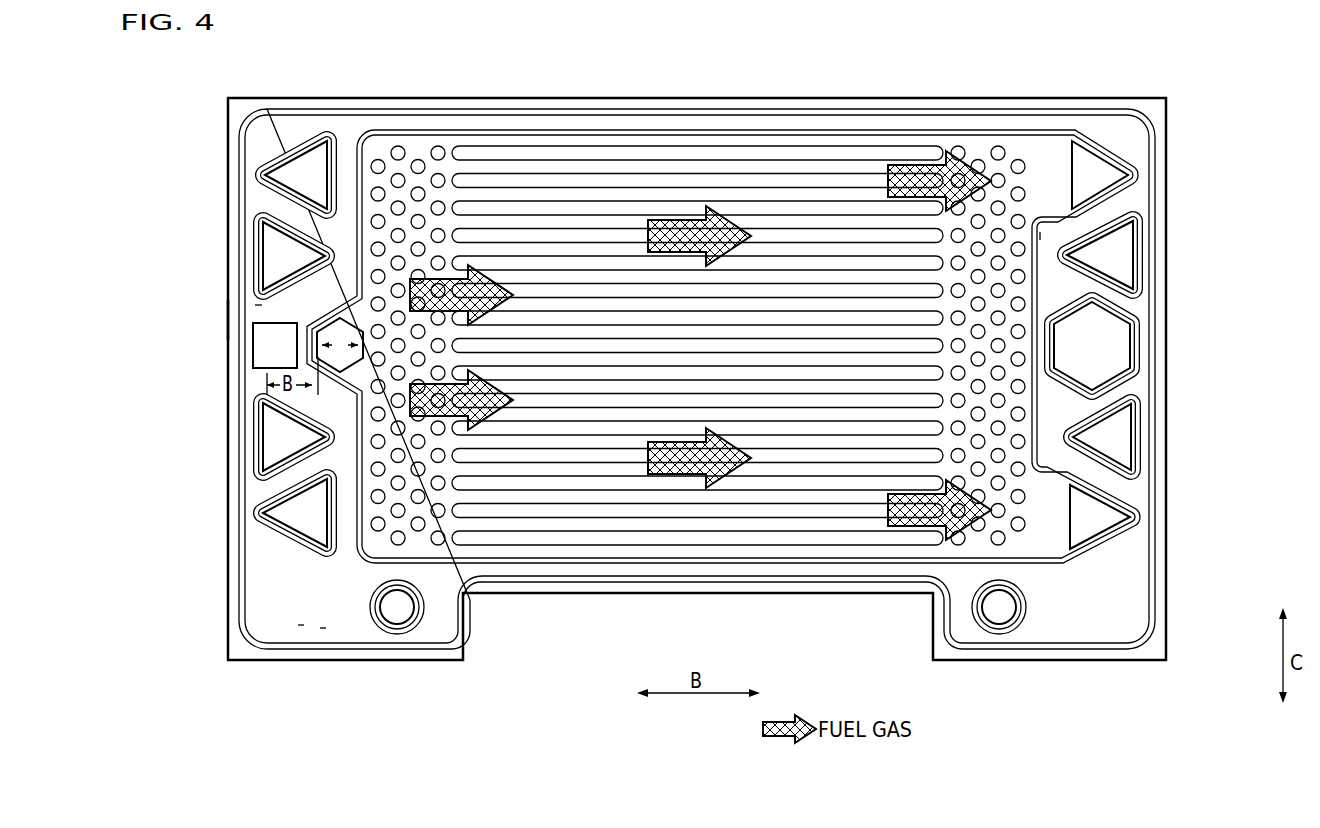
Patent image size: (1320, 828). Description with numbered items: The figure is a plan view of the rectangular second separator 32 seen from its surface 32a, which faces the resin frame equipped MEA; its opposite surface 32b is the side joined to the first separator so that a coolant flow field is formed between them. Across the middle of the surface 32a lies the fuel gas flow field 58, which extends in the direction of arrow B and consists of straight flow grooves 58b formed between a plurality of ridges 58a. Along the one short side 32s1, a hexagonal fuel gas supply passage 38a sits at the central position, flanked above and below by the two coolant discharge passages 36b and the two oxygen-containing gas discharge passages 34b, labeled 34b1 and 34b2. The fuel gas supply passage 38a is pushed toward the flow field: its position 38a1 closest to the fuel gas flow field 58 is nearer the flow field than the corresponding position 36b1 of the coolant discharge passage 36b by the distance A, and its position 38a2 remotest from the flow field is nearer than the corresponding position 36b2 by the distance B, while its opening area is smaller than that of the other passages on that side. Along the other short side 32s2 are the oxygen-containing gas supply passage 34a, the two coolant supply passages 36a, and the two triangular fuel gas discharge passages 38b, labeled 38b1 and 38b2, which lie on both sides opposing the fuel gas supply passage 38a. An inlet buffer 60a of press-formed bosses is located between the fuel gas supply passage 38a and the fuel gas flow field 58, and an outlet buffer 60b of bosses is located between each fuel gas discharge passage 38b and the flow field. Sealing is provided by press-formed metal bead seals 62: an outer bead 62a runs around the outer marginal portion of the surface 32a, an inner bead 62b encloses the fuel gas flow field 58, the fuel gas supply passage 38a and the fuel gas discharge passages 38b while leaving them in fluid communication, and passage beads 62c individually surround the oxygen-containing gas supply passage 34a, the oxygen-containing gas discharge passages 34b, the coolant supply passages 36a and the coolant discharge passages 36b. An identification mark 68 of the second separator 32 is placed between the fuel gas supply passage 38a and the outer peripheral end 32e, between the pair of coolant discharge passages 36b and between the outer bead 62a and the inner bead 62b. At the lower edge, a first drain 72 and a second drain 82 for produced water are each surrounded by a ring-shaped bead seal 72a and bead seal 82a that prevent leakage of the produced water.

The second separator 32 is at (388, 42).
The outer peripheral end 32e is at (240, 318).
The one side 32s1 is at (258, 306).
The other side 32s2 is at (1137, 306).
The surface 32a is at (301, 625).
The surface 32b is at (323, 628).
The oxygen-containing gas supply passage 34a is at (1110, 352).
The oxygen-containing gas discharge passages 34b is at (213, 342).
The oxygen-containing gas discharge passage 34b1 is at (296, 168).
The oxygen-containing gas discharge passage 34b2 is at (290, 513).
The coolant supply passages 36a is at (1120, 254).
The coolant discharge passages 36b is at (222, 348).
The position of the coolant discharge passage closest to the fuel gas flow field 36b1 is at (321, 253).
The position of the coolant discharge passage remotest from the fuel gas flow field 36b2 is at (268, 452).
The fuel gas supply passage 38a is at (233, 369).
The position of the fuel gas supply passage closest to the fuel gas flow field 38a1 is at (316, 352).
The position of the fuel gas supply passage remotest from the fuel gas flow field 38a2 is at (360, 351).
The fuel gas discharge passages 38b is at (1178, 422).
The fuel gas discharge passage 38b1 is at (1110, 170).
The fuel gas discharge passage 38b2 is at (1093, 528).
The fuel gas flow field 58 is at (697, 285).
The ridges 58a is at (598, 178).
The flow grooves 58b is at (656, 192).
The inlet buffer 60a is at (378, 162).
The outlet buffer 60b is at (1018, 162).
The bead seals 62 is at (703, 354).
The outer bead 62a is at (1153, 533).
The inner bead 62b is at (1134, 500).
The passage beads 62c is at (298, 167).
The identification mark 68 is at (272, 343).
The first drain 72 is at (396, 612).
The bead seal 72a is at (418, 621).
The second drain 82 is at (1001, 612).
The bead seal 82a is at (977, 621).